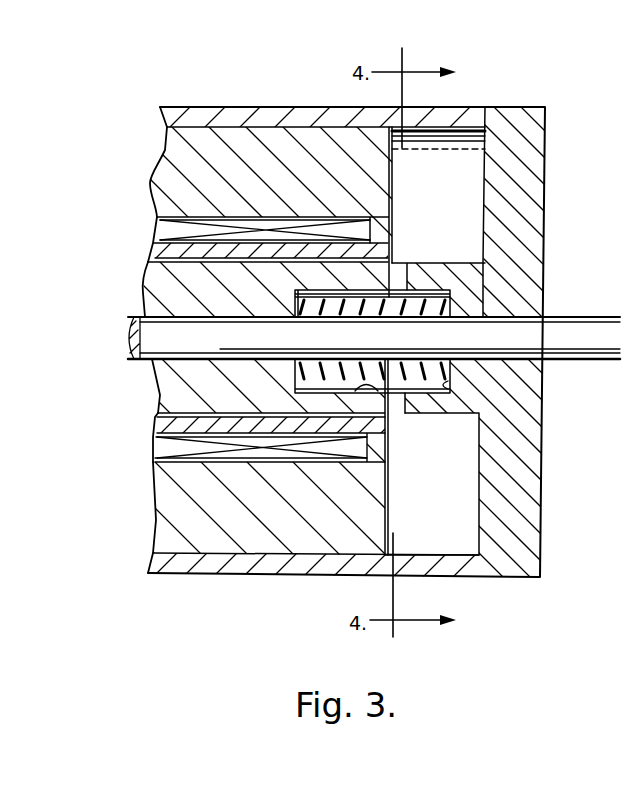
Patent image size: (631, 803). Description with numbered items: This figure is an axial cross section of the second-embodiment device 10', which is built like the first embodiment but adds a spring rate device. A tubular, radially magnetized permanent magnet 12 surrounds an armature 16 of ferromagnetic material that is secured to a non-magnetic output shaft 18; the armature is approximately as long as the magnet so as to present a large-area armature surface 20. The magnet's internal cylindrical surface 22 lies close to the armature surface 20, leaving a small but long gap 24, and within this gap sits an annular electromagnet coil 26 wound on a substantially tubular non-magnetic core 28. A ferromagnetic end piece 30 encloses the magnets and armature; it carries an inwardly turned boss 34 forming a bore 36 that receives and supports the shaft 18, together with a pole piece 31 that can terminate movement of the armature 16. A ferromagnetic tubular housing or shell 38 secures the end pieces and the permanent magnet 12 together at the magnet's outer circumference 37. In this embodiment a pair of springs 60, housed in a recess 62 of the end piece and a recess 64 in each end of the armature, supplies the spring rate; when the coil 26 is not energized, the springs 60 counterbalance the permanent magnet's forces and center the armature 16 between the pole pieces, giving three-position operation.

The device 10' is at (359, 306).
The permanent magnet 12 is at (173, 165).
The armature 16 is at (160, 292).
The output shaft 18 is at (128, 327).
The armature surface 20 is at (178, 409).
The internal cylindrical surface 22 is at (157, 207).
The gap 24 is at (146, 403).
The electromagnet coil 26 is at (160, 233).
The non-magnetic core 28 is at (157, 252).
The end piece 30 is at (530, 206).
The pole piece 31 is at (402, 297).
The boss 34 is at (460, 414).
The bore 36 is at (530, 360).
The outer circumference 37 is at (190, 130).
The tubular housing or shell 38 is at (186, 112).
The spring 60 is at (390, 300).
The recess 62 is at (450, 388).
The recess 64 is at (388, 403).